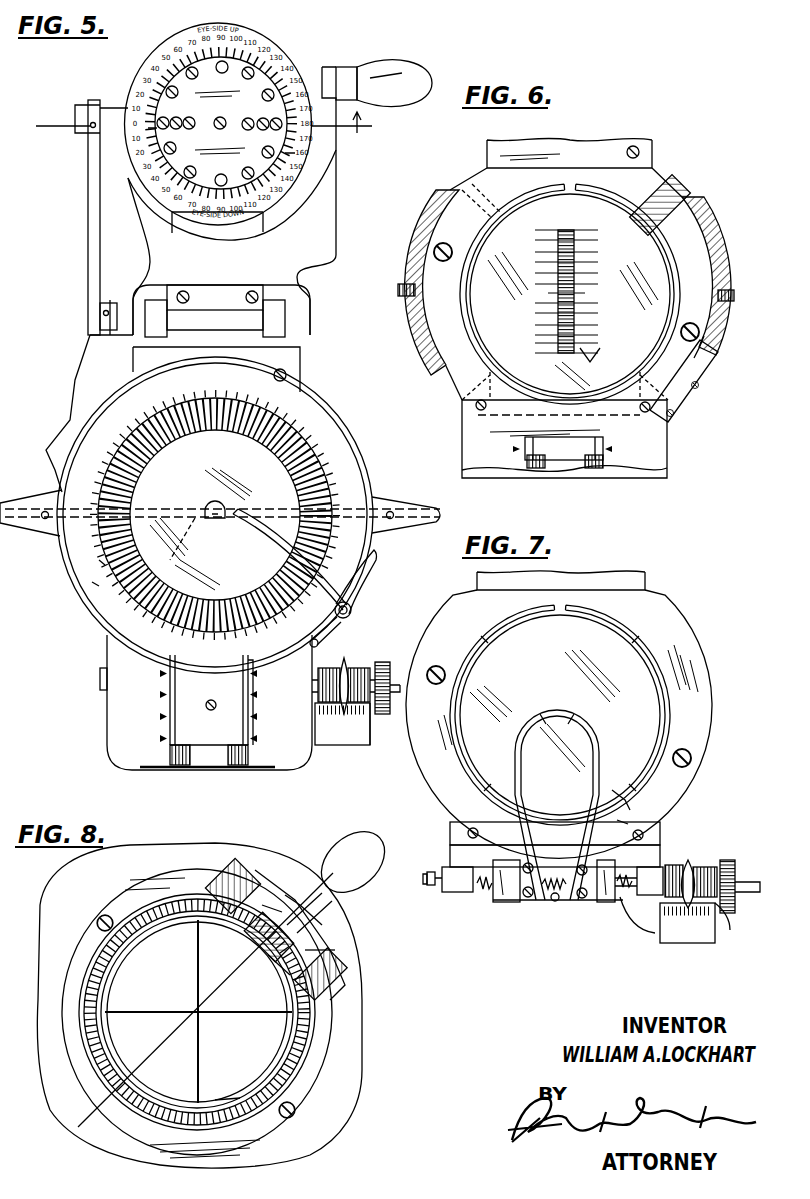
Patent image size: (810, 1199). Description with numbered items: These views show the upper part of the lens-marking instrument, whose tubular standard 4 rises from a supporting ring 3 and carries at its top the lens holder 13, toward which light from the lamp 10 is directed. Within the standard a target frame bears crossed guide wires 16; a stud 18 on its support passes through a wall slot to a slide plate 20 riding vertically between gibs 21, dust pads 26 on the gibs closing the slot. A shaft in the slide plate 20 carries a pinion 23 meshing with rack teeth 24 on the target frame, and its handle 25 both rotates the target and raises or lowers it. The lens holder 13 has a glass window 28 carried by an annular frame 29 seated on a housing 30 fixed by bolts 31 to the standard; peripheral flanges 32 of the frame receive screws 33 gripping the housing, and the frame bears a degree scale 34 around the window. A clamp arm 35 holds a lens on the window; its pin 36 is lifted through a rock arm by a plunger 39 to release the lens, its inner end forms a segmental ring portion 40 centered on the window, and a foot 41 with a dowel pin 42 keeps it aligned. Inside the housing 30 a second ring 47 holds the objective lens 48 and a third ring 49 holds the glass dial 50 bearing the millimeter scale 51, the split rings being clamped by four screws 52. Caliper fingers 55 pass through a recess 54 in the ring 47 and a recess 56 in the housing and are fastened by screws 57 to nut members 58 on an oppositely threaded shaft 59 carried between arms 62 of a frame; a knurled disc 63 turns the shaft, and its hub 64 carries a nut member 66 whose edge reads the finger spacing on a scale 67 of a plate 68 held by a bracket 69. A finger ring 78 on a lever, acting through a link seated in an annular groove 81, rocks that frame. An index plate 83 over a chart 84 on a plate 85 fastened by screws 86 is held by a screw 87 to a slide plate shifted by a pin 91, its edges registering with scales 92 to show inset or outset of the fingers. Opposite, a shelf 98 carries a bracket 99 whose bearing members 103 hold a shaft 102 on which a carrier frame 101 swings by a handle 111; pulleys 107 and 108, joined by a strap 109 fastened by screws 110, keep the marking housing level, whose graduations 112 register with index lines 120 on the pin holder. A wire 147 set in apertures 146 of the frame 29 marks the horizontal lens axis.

In FIG. 5, the supporting ring 3 is at (374, 573).
In FIG. 8, the supporting ring 3 is at (346, 1037).
In FIG. 8, the tubular standard 4 is at (292, 1083).
In FIG. 8, the incandescent lamp 10 is at (197, 1012).
In FIG. 8, the cross hair line 13 is at (320, 892).
In FIG. 8, the guide wires 16 is at (183, 982).
In FIG. 5, the pin or stud 18 is at (203, 125).
In FIG. 8, the slide plate 20 is at (258, 932).
In FIG. 8, the gibs 21 is at (225, 870).
In FIG. 8, the pinion 23 is at (268, 958).
In FIG. 8, the rack teeth 24 is at (232, 1100).
In FIG. 8, the handle 25 is at (352, 846).
In FIG. 8, the dust pads 26 is at (292, 892).
In FIG. 5, the transparent window or table 28 is at (215, 515).
In FIG. 5, the annular frame 29 is at (330, 410).
In FIG. 6, the housing member 30 is at (652, 183).
In FIG. 7, the housing member 30 is at (658, 620).
In FIG. 6, the bolts 31 is at (434, 252).
In FIG. 7, the bolts 31 is at (430, 666).
In FIG. 5, the peripheral flanges 32 is at (372, 463).
In FIG. 6, the peripheral flanges 32 is at (432, 210).
In FIG. 6, the screws 33 is at (398, 290).
In FIG. 5, the graduated scale 34 is at (92, 583).
In FIG. 5, the clamp arm 35 is at (278, 550).
In FIG. 6, the pin 36 is at (704, 392).
In FIG. 6, the plunger 39 is at (676, 415).
In FIG. 5, the segmental ring portion 40 is at (211, 508).
In FIG. 5, the foot 41 is at (355, 600).
In FIG. 6, the dowel pin 42 is at (706, 350).
In FIG. 7, the second ring 47 is at (666, 724).
In FIG. 7, the objective lens 48 is at (560, 715).
In FIG. 6, the third ring 49 is at (658, 347).
In FIG. 6, the dial 50 is at (570, 294).
In FIG. 6, the graduated scale 51 is at (590, 360).
In FIG. 6, the screws 52 is at (676, 196).
In FIG. 7, the screws 52 is at (486, 640).
In FIG. 7, the recess 54 is at (626, 798).
In FIG. 7, the guide or caliper fingers 55 is at (597, 770).
In FIG. 7, the recess 56 is at (628, 823).
In FIG. 7, the screws 57 is at (528, 897).
In FIG. 7, the nut members 58 is at (505, 903).
In FIG. 7, the shaft 59 is at (627, 893).
In FIG. 7, the arms 62 is at (458, 893).
In FIG. 5, the knurled disc 63 is at (390, 712).
In FIG. 7, the knurled disc 63 is at (734, 857).
In FIG. 5, the hub portion 64 is at (358, 672).
In FIG. 7, the hub portion 64 is at (672, 866).
In FIG. 5, the nut member 66 is at (347, 660).
In FIG. 7, the nut member 66 is at (691, 868).
In FIG. 5, the graduated scale 67 is at (350, 745).
In FIG. 7, the graduated scale 67 is at (715, 941).
In FIG. 5, the plate 68 is at (377, 740).
In FIG. 7, the plate 68 is at (731, 923).
In FIG. 7, the bracket 69 is at (653, 933).
In FIG. 5, the finger ring 78 is at (390, 680).
In FIG. 7, the finger ring 78 is at (748, 892).
In FIG. 7, the annular groove 81 is at (430, 872).
In FIG. 5, the index plate 83 is at (205, 750).
In FIG. 6, the index plate 83 is at (590, 442).
In FIG. 5, the chart 84 is at (128, 760).
In FIG. 6, the plate 85 is at (622, 478).
In FIG. 6, the screws 86 is at (484, 412).
In FIG. 7, the screws 86 is at (468, 834).
In FIG. 5, the screw 87 is at (216, 705).
In FIG. 7, the pin 91 is at (555, 902).
In FIG. 5, the graduated scales 92 is at (179, 766).
In FIG. 6, the graduated scales 92 is at (588, 466).
In FIG. 5, the shelf or extension 98 is at (286, 378).
In FIG. 5, the bracket 99 is at (300, 347).
In FIG. 5, the carrier frame 101 is at (232, 201).
In FIG. 5, the shaft 102 is at (215, 307).
In FIG. 5, the bearing members 103 is at (285, 320).
In FIG. 5, the circular disc or pulley 107 is at (88, 106).
In FIG. 5, the disc or pulley 108 is at (110, 300).
In FIG. 5, the flexible metal strap or belt 109 is at (90, 241).
In FIG. 5, the screws 110 is at (92, 130).
In FIG. 5, the handle 111 is at (368, 84).
In FIG. 5, the graduations 112 is at (250, 48).
In FIG. 5, the index lines 120 is at (157, 128).
In FIG. 5, the apertures 146 is at (45, 511).
In FIG. 5, the wire 147 is at (172, 539).